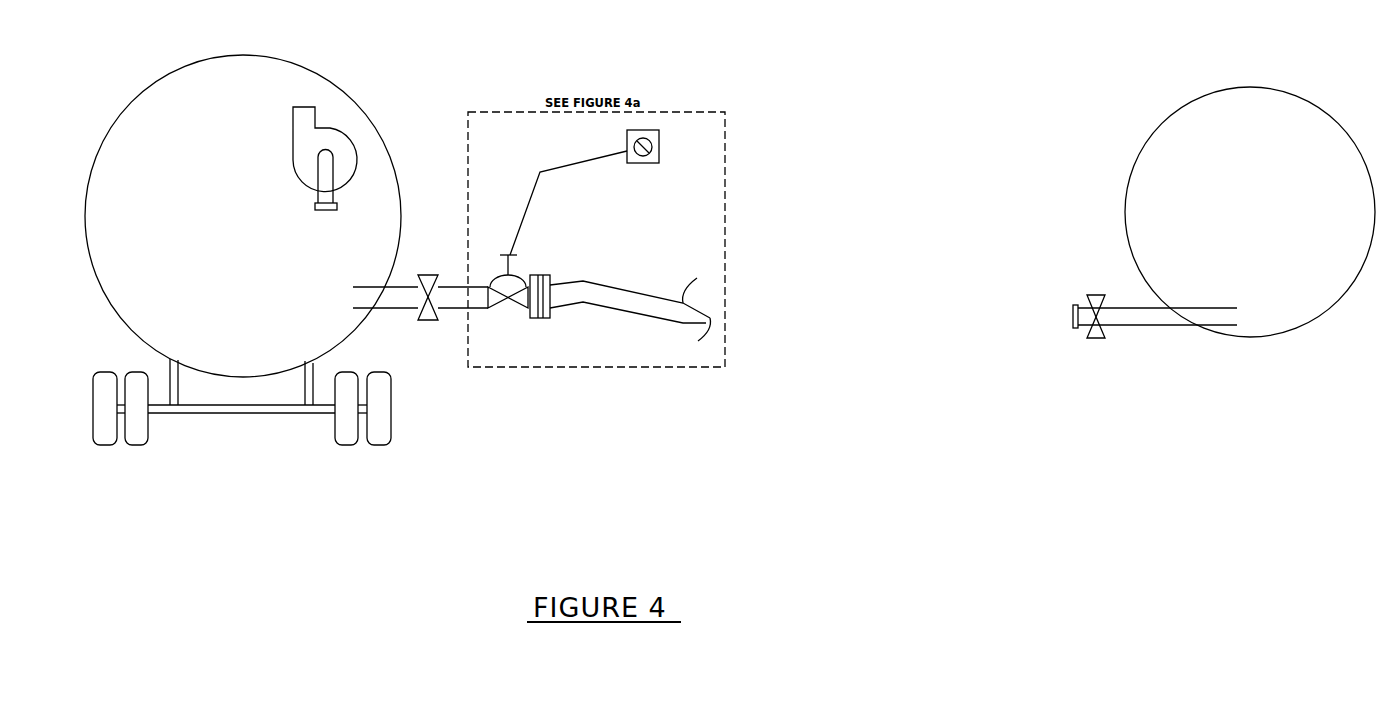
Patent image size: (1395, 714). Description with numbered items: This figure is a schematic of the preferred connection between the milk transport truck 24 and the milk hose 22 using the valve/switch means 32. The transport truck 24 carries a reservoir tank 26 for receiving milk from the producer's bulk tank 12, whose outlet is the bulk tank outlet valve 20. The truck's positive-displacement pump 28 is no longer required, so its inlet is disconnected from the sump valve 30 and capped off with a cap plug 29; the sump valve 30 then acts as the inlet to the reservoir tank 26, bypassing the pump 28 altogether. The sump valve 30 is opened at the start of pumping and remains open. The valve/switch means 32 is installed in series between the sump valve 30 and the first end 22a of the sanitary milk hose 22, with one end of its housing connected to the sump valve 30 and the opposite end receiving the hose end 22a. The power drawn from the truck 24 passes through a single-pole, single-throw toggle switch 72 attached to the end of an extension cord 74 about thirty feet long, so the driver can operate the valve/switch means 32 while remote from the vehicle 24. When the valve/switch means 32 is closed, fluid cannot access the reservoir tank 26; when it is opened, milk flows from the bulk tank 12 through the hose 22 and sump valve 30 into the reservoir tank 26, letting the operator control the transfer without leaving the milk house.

The bulk tank 12 is at (1205, 147).
The bulk tank outlet valve 20 is at (1100, 342).
The sanitary milk hose 22 is at (640, 300).
The first end of the sanitary milk hose 22a is at (553, 275).
The milk transport truck 24 is at (390, 89).
The reservoir tank 26 is at (158, 130).
The positive-displacement pump 28 is at (328, 140).
The cap plug 29 is at (340, 203).
The sump valve 30 is at (428, 325).
The valve/switch means 32 is at (511, 304).
The toggle switch 72 is at (665, 137).
The extension cord 74 is at (535, 162).